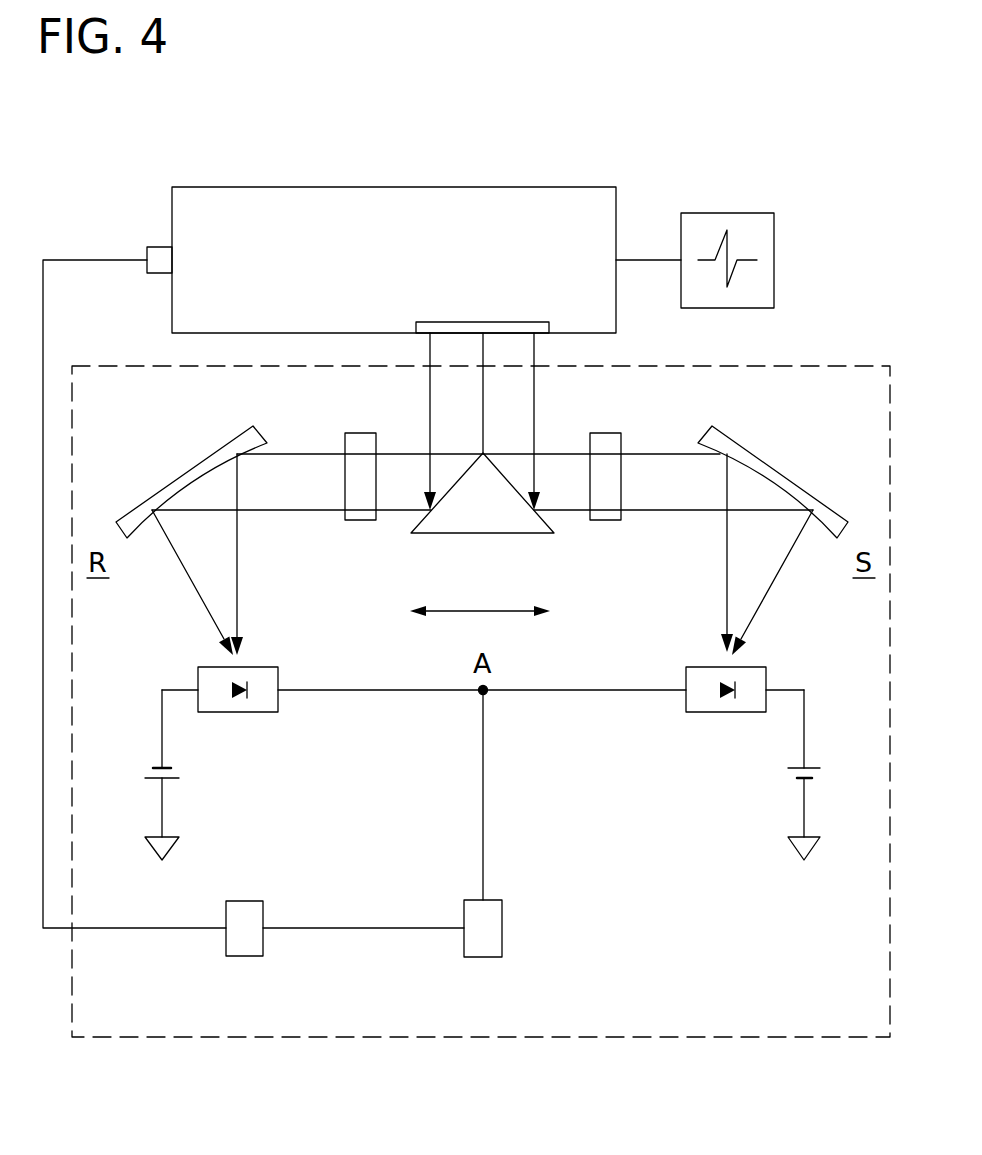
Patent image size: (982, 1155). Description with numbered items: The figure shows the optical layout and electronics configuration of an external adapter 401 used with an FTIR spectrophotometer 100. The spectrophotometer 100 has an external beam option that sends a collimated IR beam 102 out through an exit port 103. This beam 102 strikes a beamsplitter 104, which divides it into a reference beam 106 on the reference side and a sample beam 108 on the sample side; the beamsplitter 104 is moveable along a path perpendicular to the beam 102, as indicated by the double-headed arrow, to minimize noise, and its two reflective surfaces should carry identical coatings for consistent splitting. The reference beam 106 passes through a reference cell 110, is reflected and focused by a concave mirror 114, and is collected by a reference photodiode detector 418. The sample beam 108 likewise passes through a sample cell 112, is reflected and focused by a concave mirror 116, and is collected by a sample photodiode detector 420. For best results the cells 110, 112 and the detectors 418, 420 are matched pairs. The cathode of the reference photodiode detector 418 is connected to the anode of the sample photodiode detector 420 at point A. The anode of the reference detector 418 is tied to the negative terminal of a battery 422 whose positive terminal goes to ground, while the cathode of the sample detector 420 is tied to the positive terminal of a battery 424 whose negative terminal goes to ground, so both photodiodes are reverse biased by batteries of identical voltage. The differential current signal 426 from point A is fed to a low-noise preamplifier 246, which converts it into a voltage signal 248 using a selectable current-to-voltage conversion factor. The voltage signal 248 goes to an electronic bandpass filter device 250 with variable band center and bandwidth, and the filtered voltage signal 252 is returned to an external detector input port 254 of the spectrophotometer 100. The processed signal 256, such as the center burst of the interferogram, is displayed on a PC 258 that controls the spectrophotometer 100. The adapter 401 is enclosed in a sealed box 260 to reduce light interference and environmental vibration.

The FTIR spectrophotometer 100 is at (377, 205).
The collimated IR beam 102 is at (505, 440).
The exit port 103 is at (485, 322).
The beamsplitter 104 is at (463, 520).
The reference beam 106 is at (400, 498).
The sample beam 108 is at (560, 500).
The reference cell 110 is at (345, 433).
The sample cell 112 is at (608, 433).
The concave mirror 114 is at (186, 470).
The concave mirror 116 is at (780, 467).
The low-noise preamplifier 246 is at (485, 958).
The voltage signal 248 is at (325, 930).
The electronic bandpass filter device 250 is at (245, 957).
The voltage signal 252 is at (100, 930).
The external detector input port 254 is at (147, 247).
The processed signal 256 is at (632, 258).
The PC 258 is at (774, 235).
The sealed box 260 is at (806, 366).
The external adapter 401 is at (788, 973).
The reference photodiode detector 418 is at (198, 682).
The sample photodiode detector 420 is at (766, 682).
The battery 422 is at (172, 778).
The battery 424 is at (790, 768).
The differential current signal 426 is at (483, 826).